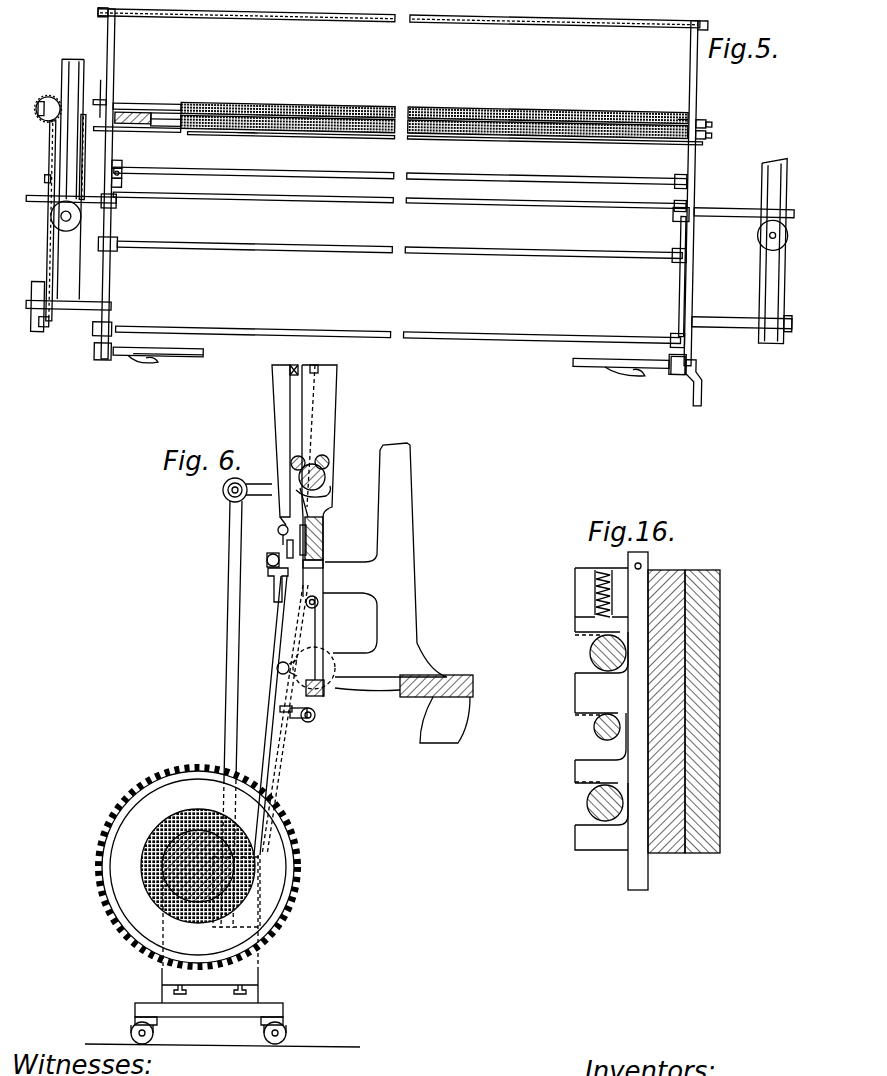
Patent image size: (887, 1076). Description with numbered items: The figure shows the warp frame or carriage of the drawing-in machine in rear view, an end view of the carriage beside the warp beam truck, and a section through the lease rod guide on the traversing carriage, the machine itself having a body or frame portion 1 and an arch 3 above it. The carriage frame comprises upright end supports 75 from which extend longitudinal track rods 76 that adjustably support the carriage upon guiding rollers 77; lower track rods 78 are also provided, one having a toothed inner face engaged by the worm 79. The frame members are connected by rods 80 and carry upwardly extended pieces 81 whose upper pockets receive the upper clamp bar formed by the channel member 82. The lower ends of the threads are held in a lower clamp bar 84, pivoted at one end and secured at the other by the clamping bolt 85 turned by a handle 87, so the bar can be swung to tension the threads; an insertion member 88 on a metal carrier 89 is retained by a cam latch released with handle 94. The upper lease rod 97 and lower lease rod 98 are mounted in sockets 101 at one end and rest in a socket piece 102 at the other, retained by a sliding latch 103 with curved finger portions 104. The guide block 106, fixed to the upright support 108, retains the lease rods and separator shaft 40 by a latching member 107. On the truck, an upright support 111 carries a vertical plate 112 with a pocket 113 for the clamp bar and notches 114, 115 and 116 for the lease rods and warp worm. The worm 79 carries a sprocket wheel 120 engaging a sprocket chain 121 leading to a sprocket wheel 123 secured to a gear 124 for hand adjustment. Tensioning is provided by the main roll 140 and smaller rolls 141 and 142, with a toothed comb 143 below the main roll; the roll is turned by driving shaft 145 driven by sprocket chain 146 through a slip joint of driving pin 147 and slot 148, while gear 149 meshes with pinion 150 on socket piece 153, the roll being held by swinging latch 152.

In FIG. 6, the body or frame portion 1 is at (478, 718).
In FIG. 5, the arch 3 is at (72, 70).
In FIG. 6, the arch 3 is at (405, 488).
In FIG. 16, the warp separator shaft 40 is at (595, 730).
In FIG. 5, the upright end supports 75 is at (691, 270).
In FIG. 6, the upright end supports 75 is at (290, 600).
In FIG. 5, the longitudinal track rods 76 is at (97, 196).
In FIG. 6, the longitudinal track rods 76 is at (266, 560).
In FIG. 5, the guiding rollers 77 is at (60, 217).
In FIG. 6, the guiding rollers 77 is at (280, 578).
In FIG. 5, the lower track rods 78 is at (80, 312).
In FIG. 6, the lower track rods 78 is at (277, 666).
In FIG. 5, the worm 79 is at (46, 284).
In FIG. 6, the worm 79 is at (325, 686).
In FIG. 5, the rods 80 is at (160, 246).
In FIG. 6, the rods 80 is at (319, 604).
In FIG. 5, the upwardly extended pieces 81 is at (116, 45).
In FIG. 6, the upwardly extended pieces 81 is at (333, 405).
In FIG. 5, the channel member 82 is at (312, 18).
In FIG. 6, the channel member 82 is at (290, 364).
In FIG. 5, the lower clamp bar 84 is at (209, 348).
In FIG. 6, the lower clamp bar 84 is at (312, 720).
In FIG. 5, the clamping bolt 85 is at (684, 364).
In FIG. 5, the handle 87 is at (708, 392).
In FIG. 6, the insertion member 88 is at (292, 712).
In FIG. 5, the metal carrier 89 is at (190, 356).
In FIG. 5, the handle of the cam latch 94 is at (138, 358).
In FIG. 5, the upper lease rod 97 is at (236, 168).
In FIG. 16, the upper lease rod 97 is at (595, 660).
In FIG. 5, the lower lease rod 98 is at (232, 197).
In FIG. 16, the lower lease rod 98 is at (590, 806).
In FIG. 5, the sockets 101 is at (678, 178).
In FIG. 5, the socket piece 102 is at (125, 182).
In FIG. 5, the vertically sliding latch 103 is at (125, 163).
In FIG. 5, the curved finger portions 104 is at (125, 172).
In FIG. 6, the guide block 106 is at (323, 548).
In FIG. 16, the guide block 106 is at (680, 570).
In FIG. 16, the latching member 107 is at (590, 773).
In FIG. 16, the upright support 108 is at (704, 690).
In FIG. 6, the upright support 111 is at (232, 549).
In FIG. 6, the vertical plate 112 is at (280, 392).
In FIG. 6, the pocket 113 is at (290, 370).
In FIG. 6, the notch 114 is at (278, 528).
In FIG. 6, the notch 115 is at (306, 534).
In FIG. 6, the notch 116 is at (323, 564).
In FIG. 5, the sprocket wheel 120 is at (52, 330).
In FIG. 5, the sprocket chain 121 is at (58, 180).
In FIG. 5, the sprocket wheel 123 is at (48, 125).
In FIG. 5, the gear 124 is at (46, 98).
In FIG. 5, the main roll 140 is at (330, 132).
In FIG. 6, the main roll 140 is at (326, 476).
In FIG. 5, the roll 141 is at (359, 103).
In FIG. 6, the roll 141 is at (294, 458).
In FIG. 6, the roll 142 is at (327, 457).
In FIG. 5, the toothed comb 143 is at (248, 132).
In FIG. 6, the toothed comb 143 is at (328, 492).
In FIG. 5, the driving shaft 145 is at (100, 80).
In FIG. 5, the sprocket chain 146 is at (110, 133).
In FIG. 5, the driving pin 147 is at (146, 112).
In FIG. 5, the slot 148 is at (176, 114).
In FIG. 5, the gear 149 is at (713, 125).
In FIG. 5, the pinion 150 is at (700, 108).
In FIG. 5, the swinging latch 152 is at (108, 99).
In FIG. 5, the socket piece 153 is at (687, 110).